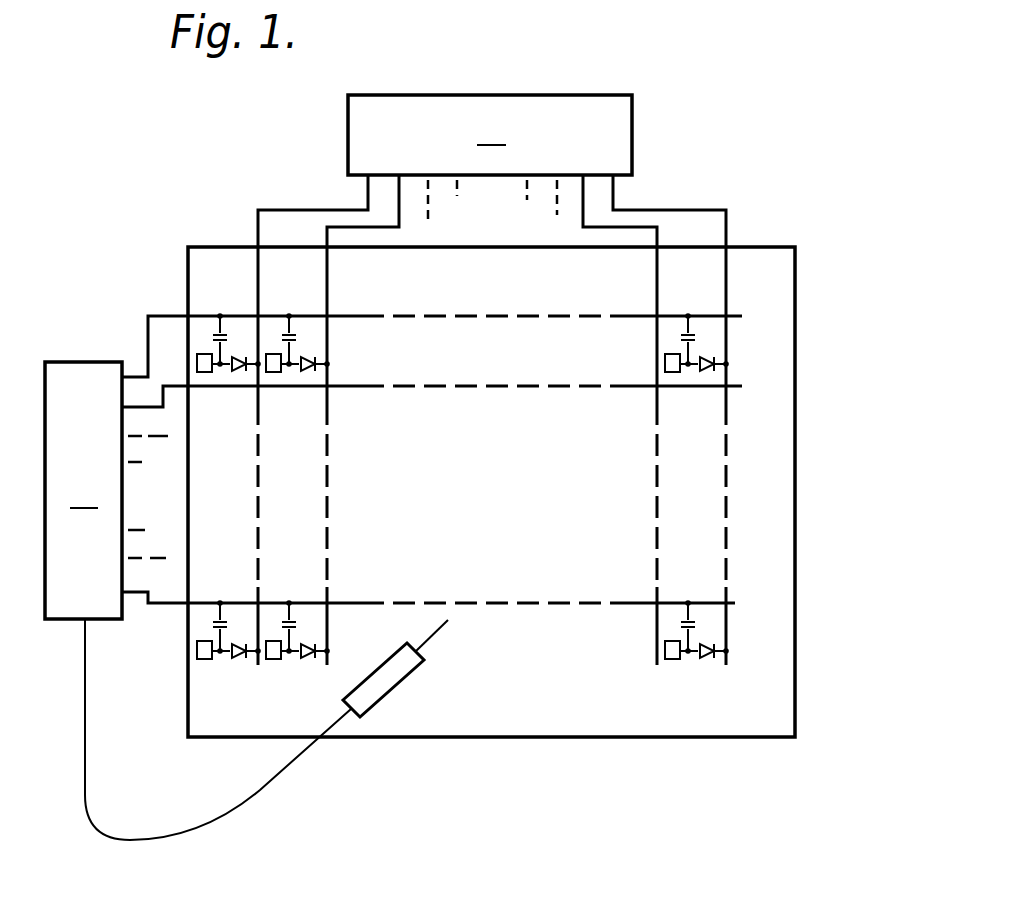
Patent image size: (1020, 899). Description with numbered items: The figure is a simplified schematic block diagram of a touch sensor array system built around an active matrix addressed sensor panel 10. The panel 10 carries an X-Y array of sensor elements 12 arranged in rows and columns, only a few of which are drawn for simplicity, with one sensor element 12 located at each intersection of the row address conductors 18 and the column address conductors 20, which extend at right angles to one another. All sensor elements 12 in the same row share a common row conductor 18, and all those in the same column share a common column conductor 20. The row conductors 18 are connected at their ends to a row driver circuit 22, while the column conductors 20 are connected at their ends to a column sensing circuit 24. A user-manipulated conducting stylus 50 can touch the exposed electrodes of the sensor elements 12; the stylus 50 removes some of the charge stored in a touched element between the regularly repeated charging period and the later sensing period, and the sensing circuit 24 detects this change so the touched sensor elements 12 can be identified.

The sensor panel 10 is at (795, 375).
The sensor element 12 is at (200, 332).
The row address conductor 18 is at (345, 318).
The column address conductor 20 is at (726, 269).
The row driver circuit 22 is at (86, 372).
The sensing circuit 24 is at (612, 133).
The conducting stylus 50 is at (400, 680).